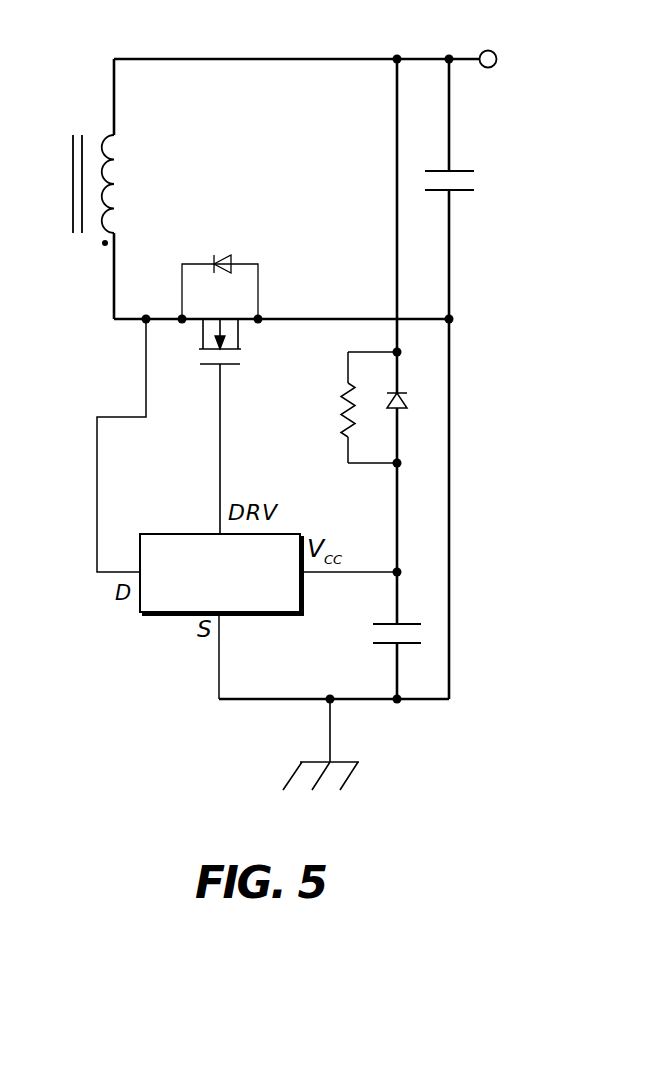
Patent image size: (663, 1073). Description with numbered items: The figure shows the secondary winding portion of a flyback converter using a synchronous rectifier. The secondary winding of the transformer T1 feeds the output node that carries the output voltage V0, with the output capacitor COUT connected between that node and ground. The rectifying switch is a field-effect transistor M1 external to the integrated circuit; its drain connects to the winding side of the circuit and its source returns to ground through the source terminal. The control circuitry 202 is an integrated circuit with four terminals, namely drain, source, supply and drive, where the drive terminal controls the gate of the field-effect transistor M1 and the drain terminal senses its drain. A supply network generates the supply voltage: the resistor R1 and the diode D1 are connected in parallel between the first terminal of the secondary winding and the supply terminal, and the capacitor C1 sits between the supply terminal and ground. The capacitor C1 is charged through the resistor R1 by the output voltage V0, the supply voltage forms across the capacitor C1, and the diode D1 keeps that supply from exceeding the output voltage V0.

The control circuitry 202 is at (237, 603).
The transformer T1 is at (85, 163).
The field-effect transistor M1 is at (220, 394).
The resistor R1 is at (346, 407).
The diode D1 is at (413, 383).
The capacitor C1 is at (379, 640).
The output capacitor COUT is at (480, 188).
The output voltage V0 is at (484, 38).